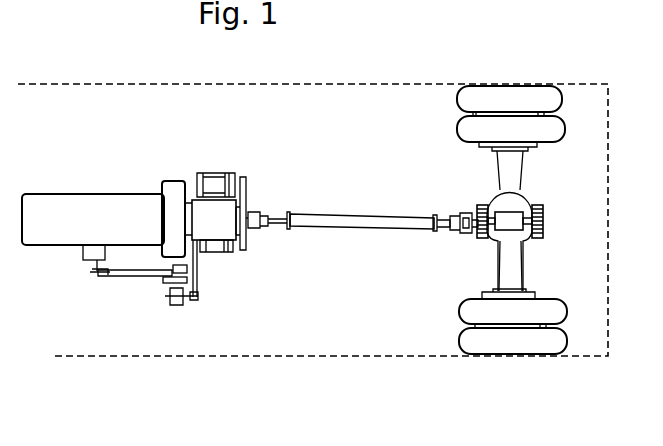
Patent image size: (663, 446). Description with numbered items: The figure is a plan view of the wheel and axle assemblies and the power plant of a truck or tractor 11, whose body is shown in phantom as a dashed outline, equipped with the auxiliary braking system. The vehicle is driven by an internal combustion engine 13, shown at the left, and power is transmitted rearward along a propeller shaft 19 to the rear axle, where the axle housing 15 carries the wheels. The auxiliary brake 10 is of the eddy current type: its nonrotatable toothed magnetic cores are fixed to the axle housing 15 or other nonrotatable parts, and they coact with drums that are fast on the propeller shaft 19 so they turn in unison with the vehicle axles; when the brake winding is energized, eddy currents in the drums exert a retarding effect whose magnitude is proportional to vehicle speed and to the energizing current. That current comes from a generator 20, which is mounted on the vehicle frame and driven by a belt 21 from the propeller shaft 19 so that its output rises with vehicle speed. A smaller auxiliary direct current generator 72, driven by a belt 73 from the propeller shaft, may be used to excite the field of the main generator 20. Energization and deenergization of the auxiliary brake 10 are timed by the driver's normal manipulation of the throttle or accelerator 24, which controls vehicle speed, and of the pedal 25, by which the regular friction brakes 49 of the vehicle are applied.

The auxiliary brake 10 is at (481, 205).
The truck or tractor 11 is at (319, 84).
The internal combustion engine 13 is at (91, 201).
The axle housing 15 is at (519, 259).
The propeller shaft 19 is at (375, 219).
The generator 20 is at (217, 173).
The belt 21 is at (246, 204).
The throttle or accelerator 24 is at (175, 268).
The pedal 25 is at (165, 280).
The friction brakes 49 is at (483, 144).
The auxiliary direct current generator 72 is at (216, 253).
The belt 73 is at (244, 238).